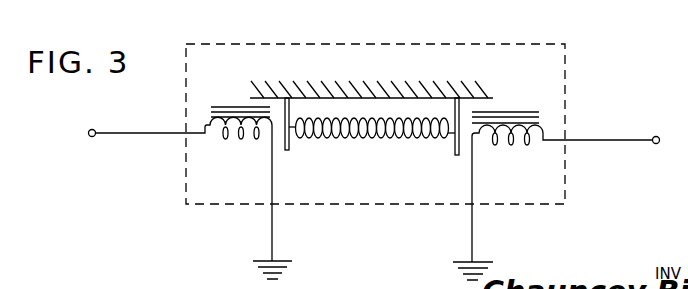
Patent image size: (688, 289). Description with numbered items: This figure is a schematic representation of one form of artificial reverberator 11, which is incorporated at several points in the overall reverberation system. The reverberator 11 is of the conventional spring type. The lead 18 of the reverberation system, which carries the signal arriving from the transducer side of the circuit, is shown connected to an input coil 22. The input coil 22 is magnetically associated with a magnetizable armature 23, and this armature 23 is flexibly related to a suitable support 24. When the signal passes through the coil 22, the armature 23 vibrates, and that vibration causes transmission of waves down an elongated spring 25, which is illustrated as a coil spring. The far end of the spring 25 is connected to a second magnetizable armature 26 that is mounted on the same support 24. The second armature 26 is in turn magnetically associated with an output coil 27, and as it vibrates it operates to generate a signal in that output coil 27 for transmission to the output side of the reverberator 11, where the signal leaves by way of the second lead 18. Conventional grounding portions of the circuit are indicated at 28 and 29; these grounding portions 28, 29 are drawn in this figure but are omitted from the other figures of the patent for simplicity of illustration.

The artificial reverberator 11 is at (322, 43).
The lead 18 is at (128, 135).
The input coil 22 is at (231, 140).
The magnetizable armature 23 is at (289, 150).
The support 24 is at (466, 93).
The elongated spring 25 is at (372, 139).
The second magnetizable armature 26 is at (446, 155).
The output coil 27 is at (509, 150).
The grounding portion 28 is at (273, 240).
The grounding portion 29 is at (474, 243).